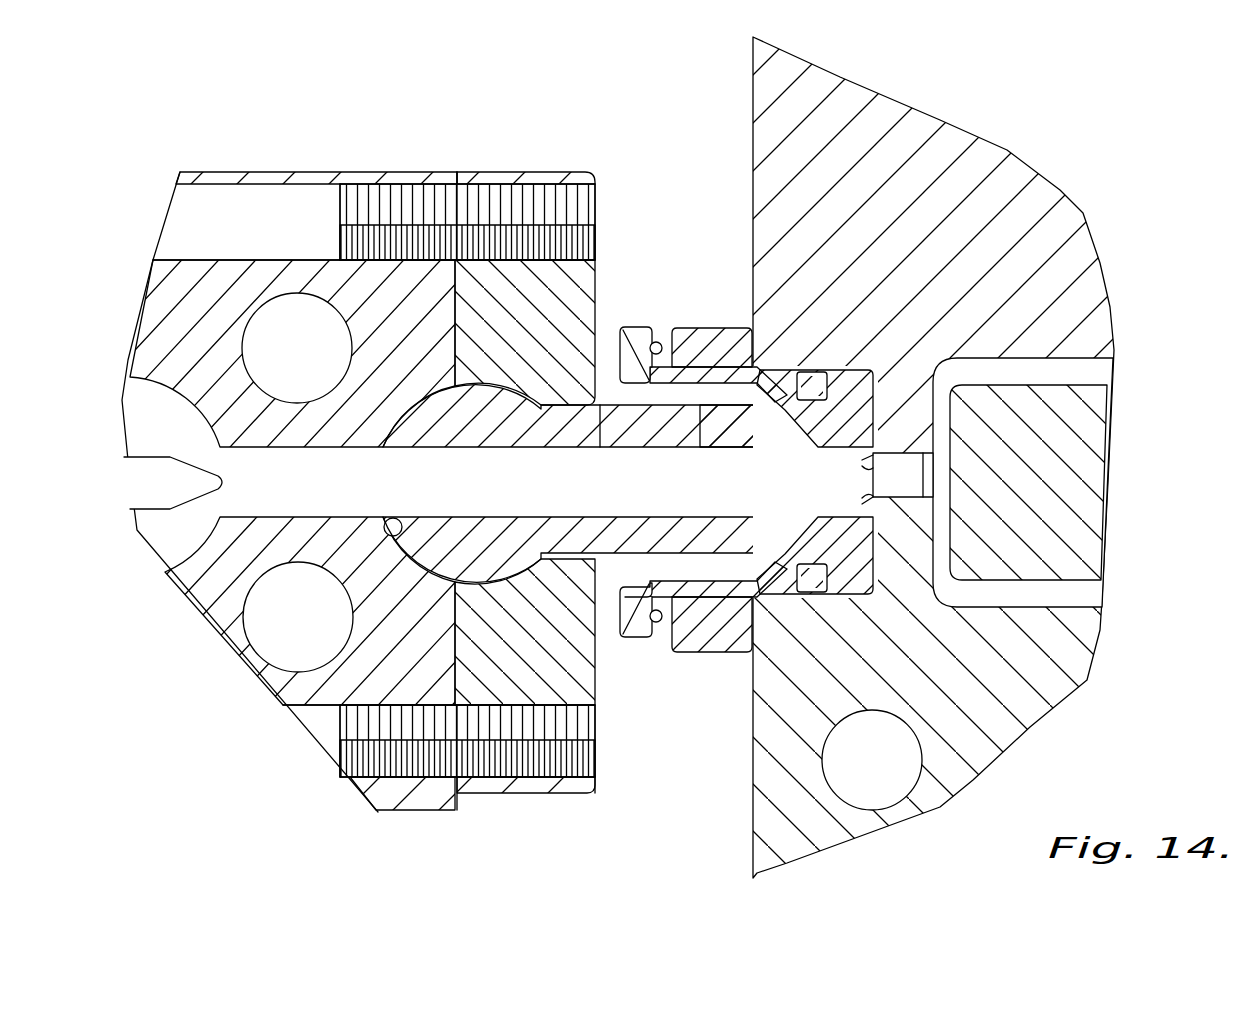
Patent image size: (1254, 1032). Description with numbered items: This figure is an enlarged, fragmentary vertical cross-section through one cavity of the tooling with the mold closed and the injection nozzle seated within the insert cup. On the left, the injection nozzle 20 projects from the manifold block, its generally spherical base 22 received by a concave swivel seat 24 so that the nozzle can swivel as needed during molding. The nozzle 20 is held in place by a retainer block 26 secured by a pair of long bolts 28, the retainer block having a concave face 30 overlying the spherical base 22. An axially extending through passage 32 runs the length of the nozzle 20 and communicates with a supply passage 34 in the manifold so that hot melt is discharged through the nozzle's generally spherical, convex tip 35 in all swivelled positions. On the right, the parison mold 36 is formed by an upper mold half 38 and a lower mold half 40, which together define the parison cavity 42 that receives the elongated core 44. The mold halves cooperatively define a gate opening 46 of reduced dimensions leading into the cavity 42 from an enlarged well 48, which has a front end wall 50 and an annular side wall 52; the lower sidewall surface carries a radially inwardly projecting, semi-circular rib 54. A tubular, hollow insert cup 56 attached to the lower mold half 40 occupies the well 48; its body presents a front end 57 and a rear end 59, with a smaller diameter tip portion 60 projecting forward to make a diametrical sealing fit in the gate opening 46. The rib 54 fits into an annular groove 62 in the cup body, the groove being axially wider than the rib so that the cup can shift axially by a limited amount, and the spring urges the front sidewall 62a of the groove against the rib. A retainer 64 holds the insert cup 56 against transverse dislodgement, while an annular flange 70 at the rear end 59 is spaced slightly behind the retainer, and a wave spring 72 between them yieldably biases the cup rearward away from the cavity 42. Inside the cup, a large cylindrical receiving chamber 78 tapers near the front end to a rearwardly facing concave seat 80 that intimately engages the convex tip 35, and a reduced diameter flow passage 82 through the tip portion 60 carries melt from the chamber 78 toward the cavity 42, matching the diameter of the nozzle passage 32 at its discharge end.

The injection nozzle 20 is at (682, 560).
The spherical base 22 is at (412, 432).
The swivel seat 24 is at (400, 545).
The retainer block 26 is at (515, 185).
The bolts 28 is at (270, 207).
The concave face 30 is at (470, 400).
The through passage 32 is at (606, 500).
The supply passage 34 is at (247, 500).
The convex tip 35 is at (850, 490).
The parison mold 36 is at (752, 830).
The upper mold half 38 is at (975, 150).
The lower mold half 40 is at (830, 840).
The parison cavity 42 is at (1078, 366).
The core 44 is at (1095, 477).
The gate opening 46 is at (932, 507).
The well 48 is at (823, 390).
The front end wall 50 is at (873, 432).
The annular side wall 52 is at (778, 385).
The semi-circular rib 54 is at (797, 594).
The insert cup 56 is at (639, 324).
The front end 57 is at (872, 556).
The rear end 59 is at (620, 352).
The tip portion 60 is at (893, 463).
The annular groove 62 is at (770, 652).
The front sidewall 62a is at (812, 600).
The retainer 64 is at (722, 340).
The annular flange 70 is at (634, 375).
The spring 72 is at (660, 342).
The receiving chamber 78 is at (730, 400).
The concave seat 80 is at (843, 471).
The flow passage 82 is at (900, 490).